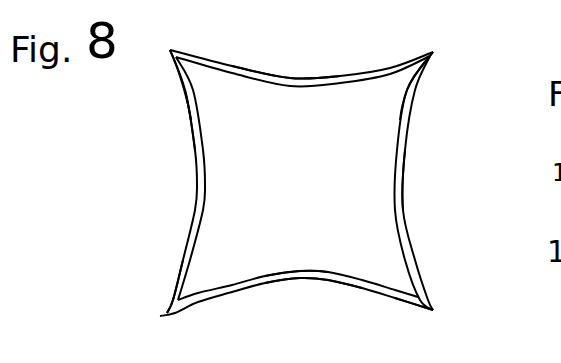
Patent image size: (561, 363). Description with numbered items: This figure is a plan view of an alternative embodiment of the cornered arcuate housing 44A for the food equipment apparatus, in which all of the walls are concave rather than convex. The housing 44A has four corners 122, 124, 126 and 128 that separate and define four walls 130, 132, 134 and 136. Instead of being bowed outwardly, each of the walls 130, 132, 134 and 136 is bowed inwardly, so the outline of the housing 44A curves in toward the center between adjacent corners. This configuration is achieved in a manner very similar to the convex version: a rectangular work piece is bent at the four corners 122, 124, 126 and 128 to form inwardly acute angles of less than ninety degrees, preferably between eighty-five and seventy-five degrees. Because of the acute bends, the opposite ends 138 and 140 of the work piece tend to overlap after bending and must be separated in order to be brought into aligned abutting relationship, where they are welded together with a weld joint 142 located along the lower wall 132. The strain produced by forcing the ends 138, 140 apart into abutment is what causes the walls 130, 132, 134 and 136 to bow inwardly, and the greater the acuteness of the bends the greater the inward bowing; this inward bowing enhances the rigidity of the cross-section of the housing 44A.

The cornered arcuate housing 44A is at (327, 199).
The corner 122 is at (170, 50).
The corner 124 is at (160, 316).
The corner 126 is at (434, 312).
The corner 128 is at (433, 52).
The wall 130 is at (197, 185).
The wall 132 is at (305, 281).
The wall 134 is at (404, 179).
The wall 136 is at (292, 77).
The end 138 is at (344, 283).
The end 140 is at (283, 273).
The weld joint 142 is at (318, 272).